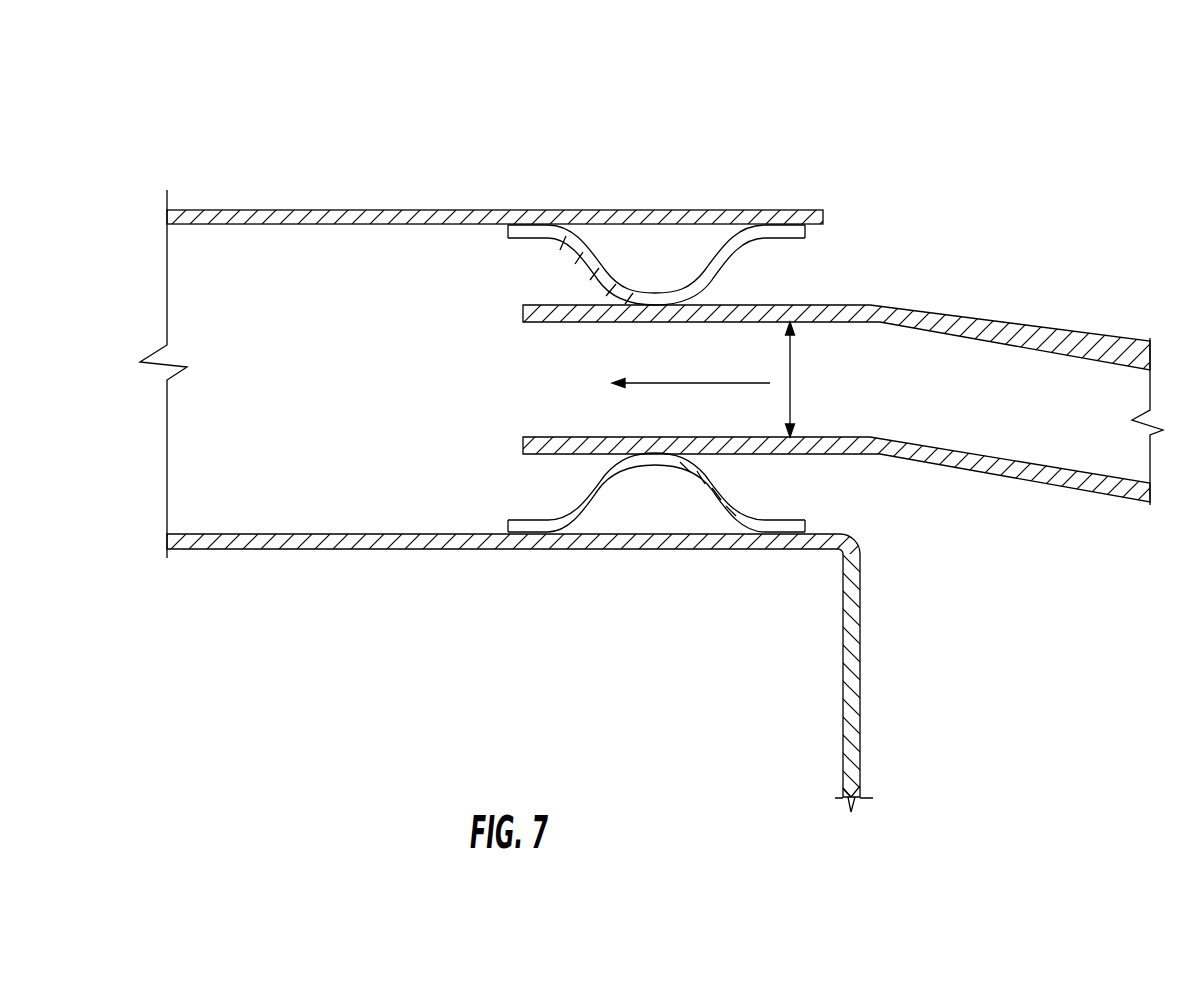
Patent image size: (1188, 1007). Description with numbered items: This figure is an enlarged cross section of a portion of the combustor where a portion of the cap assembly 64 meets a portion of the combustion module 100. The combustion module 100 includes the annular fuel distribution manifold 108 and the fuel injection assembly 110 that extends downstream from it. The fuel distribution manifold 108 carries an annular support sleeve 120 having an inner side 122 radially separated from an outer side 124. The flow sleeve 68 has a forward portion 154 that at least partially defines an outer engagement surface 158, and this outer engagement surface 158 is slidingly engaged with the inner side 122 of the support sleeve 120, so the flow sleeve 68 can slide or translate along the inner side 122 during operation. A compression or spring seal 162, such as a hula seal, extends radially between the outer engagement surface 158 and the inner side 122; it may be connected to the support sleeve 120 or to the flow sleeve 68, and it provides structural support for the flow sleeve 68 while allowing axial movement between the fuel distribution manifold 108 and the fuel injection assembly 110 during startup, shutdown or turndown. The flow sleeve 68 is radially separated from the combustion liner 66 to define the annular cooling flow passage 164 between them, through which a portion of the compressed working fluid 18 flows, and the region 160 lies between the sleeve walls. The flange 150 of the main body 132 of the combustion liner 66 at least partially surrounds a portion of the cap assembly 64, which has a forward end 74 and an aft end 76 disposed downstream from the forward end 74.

The compressed working fluid 18 is at (683, 383).
The cap assembly 64 is at (753, 597).
The combustion liner 66 is at (983, 480).
The flow sleeve 68 is at (1037, 330).
The forward end 74 is at (860, 642).
The aft end 76 is at (478, 550).
The combustion module 100 is at (866, 190).
The fuel distribution manifold 108 is at (443, 197).
The fuel injection assembly 110 is at (977, 305).
The support sleeve 120 is at (563, 210).
The inner side 122 is at (677, 226).
The outer side 124 is at (708, 210).
The main body 132 is at (1072, 471).
The flange 150 is at (823, 437).
The forward portion 154 is at (640, 325).
The outer engagement surface 158 is at (730, 305).
The flow passage 160 is at (1030, 407).
The spring seal 162 is at (567, 240).
The cooling flow passage 164 is at (793, 370).